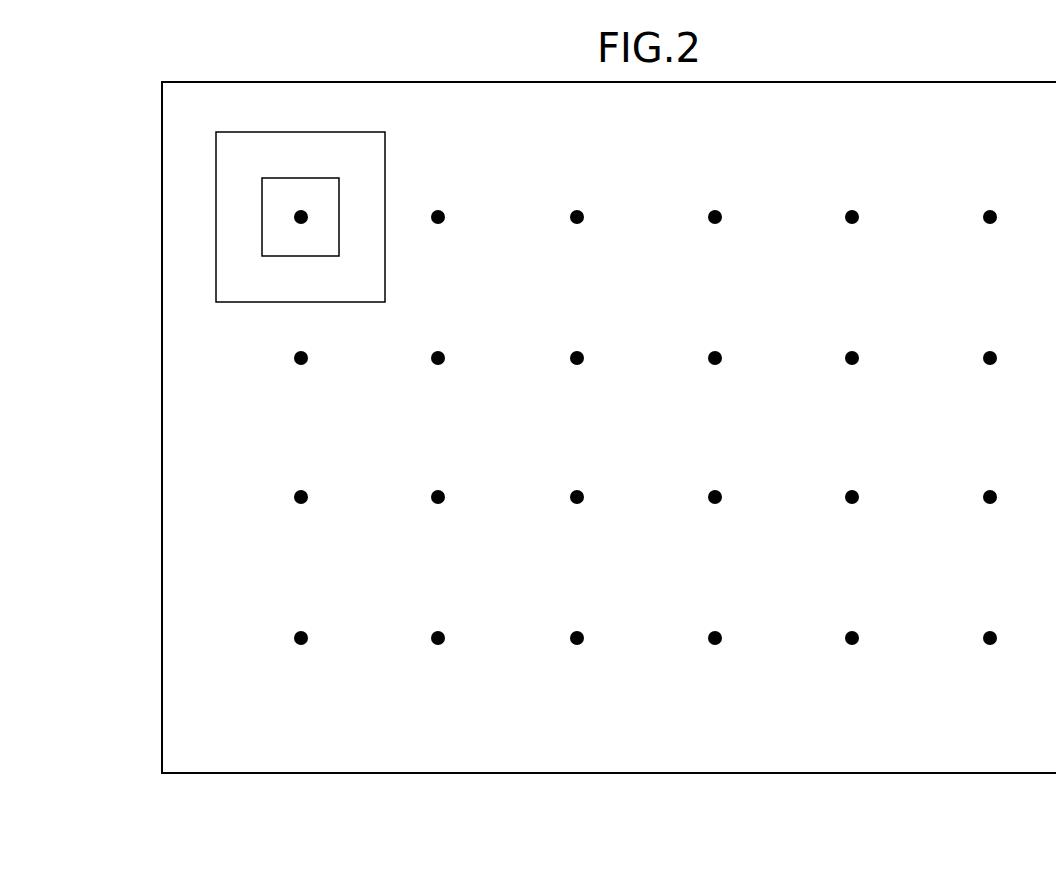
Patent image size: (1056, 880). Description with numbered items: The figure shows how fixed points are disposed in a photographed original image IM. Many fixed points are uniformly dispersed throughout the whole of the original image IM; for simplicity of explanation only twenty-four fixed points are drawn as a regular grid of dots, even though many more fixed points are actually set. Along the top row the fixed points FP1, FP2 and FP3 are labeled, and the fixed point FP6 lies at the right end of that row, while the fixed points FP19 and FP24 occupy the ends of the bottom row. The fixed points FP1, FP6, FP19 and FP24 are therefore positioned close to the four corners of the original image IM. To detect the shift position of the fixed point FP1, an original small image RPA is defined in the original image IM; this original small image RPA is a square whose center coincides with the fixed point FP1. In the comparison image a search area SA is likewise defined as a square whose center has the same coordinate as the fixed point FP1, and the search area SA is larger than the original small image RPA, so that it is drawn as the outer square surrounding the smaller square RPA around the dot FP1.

The original image IM is at (665, 774).
The search area SA is at (385, 270).
The original small image RPA is at (339, 197).
The fixed point FP1 is at (300, 209).
The fixed point FP2 is at (444, 216).
The fixed point FP3 is at (583, 216).
The fixed point FP6 is at (990, 209).
The fixed point FP19 is at (301, 646).
The fixed point FP24 is at (990, 646).